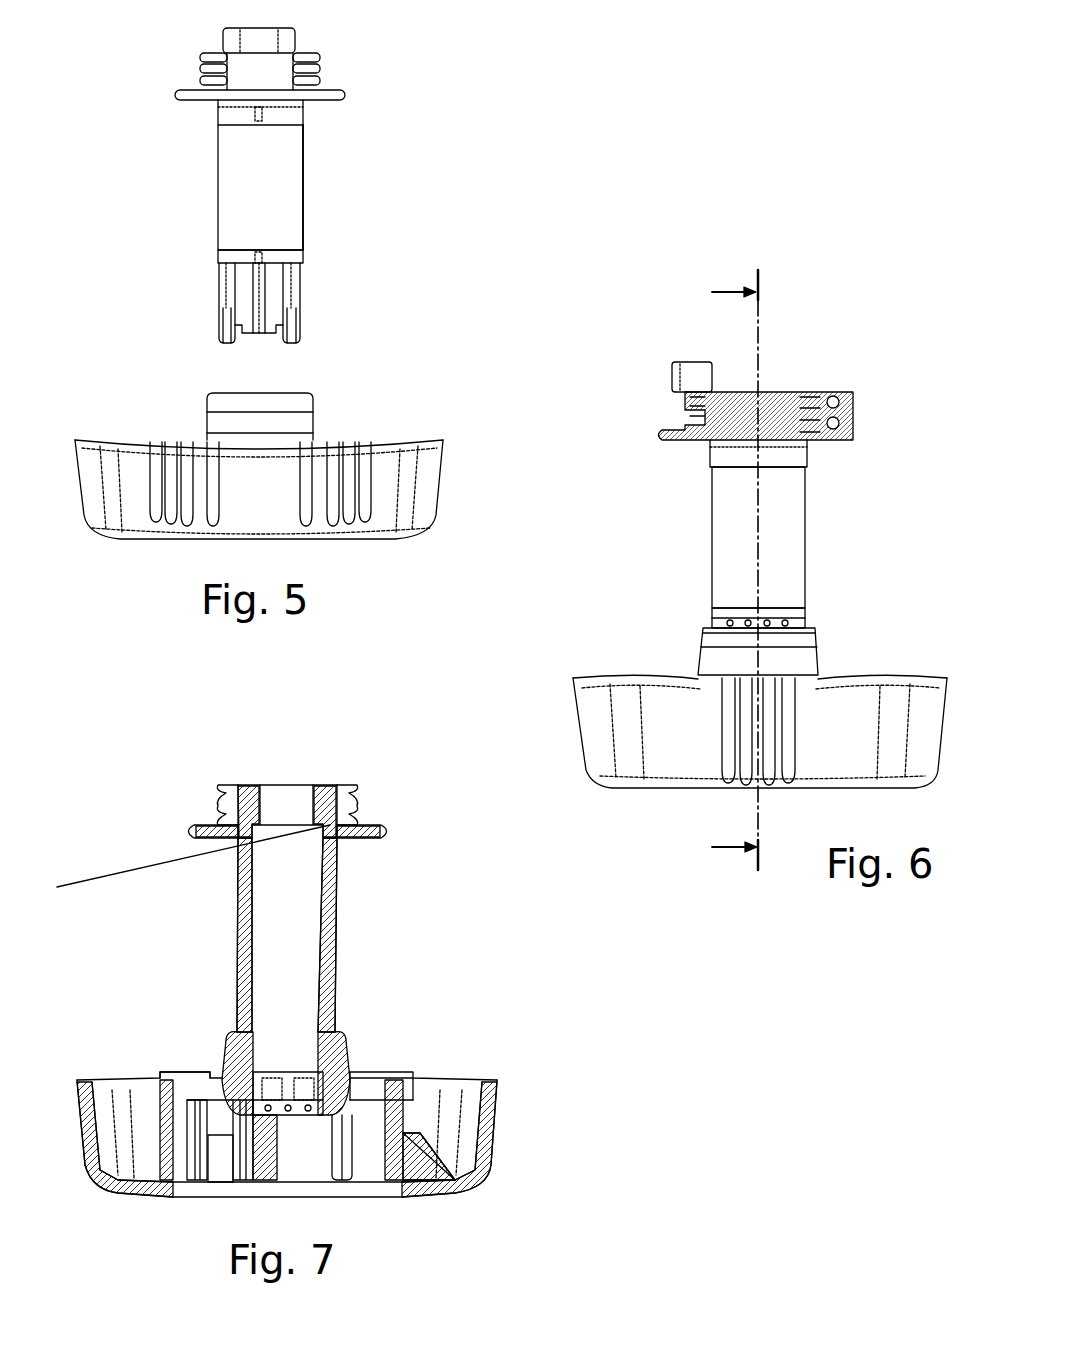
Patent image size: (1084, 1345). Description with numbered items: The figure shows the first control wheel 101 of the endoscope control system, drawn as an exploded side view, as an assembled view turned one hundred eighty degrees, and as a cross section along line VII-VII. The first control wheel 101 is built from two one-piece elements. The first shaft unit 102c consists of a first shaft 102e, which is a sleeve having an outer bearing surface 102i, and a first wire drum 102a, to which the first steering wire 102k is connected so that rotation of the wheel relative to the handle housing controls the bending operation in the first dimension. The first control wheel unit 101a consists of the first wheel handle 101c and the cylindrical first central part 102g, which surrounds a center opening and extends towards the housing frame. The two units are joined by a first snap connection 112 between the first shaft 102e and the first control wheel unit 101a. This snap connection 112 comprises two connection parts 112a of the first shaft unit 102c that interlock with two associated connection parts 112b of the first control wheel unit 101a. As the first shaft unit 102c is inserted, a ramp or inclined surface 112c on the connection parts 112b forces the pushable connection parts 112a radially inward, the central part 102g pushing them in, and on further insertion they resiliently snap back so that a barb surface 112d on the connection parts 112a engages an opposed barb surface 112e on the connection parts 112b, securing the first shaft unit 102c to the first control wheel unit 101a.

In FIG. 6, the first control wheel 101 is at (656, 275).
In FIG. 5, the first control wheel unit 101a is at (324, 503).
In FIG. 6, the first control wheel unit 101a is at (733, 708).
In FIG. 7, the first control wheel unit 101a is at (381, 1148).
In FIG. 5, the first wheel handle 101c is at (413, 477).
In FIG. 6, the first wheel handle 101c is at (813, 715).
In FIG. 7, the first wheel handle 101c is at (495, 1082).
In FIG. 5, the first wire drum 102a is at (320, 67).
In FIG. 6, the first wire drum 102a is at (812, 392).
In FIG. 7, the first wire drum 102a is at (242, 785).
In FIG. 5, the first shaft unit 102c is at (306, 179).
In FIG. 6, the first shaft unit 102c is at (743, 482).
In FIG. 7, the first shaft unit 102c is at (300, 927).
In FIG. 5, the first shaft 102e is at (228, 198).
In FIG. 6, the first shaft 102e is at (792, 532).
In FIG. 7, the first shaft 102e is at (333, 905).
In FIG. 5, the first central part 102g is at (305, 420).
In FIG. 7, the first central part 102g is at (347, 1043).
In FIG. 5, the outer bearing surface 102i is at (303, 185).
In FIG. 7, the first steering wire 102k is at (87, 878).
In FIG. 7, the first snap connection 112 is at (355, 1108).
In FIG. 5, the connection parts 112a is at (300, 323).
In FIG. 7, the associated connection parts 112b is at (340, 1090).
In FIG. 7, the ramp or inclined surface 112c is at (213, 1055).
In FIG. 5, the barb surface 112d is at (223, 333).
In FIG. 7, the opposed barb surface 112e is at (207, 1095).